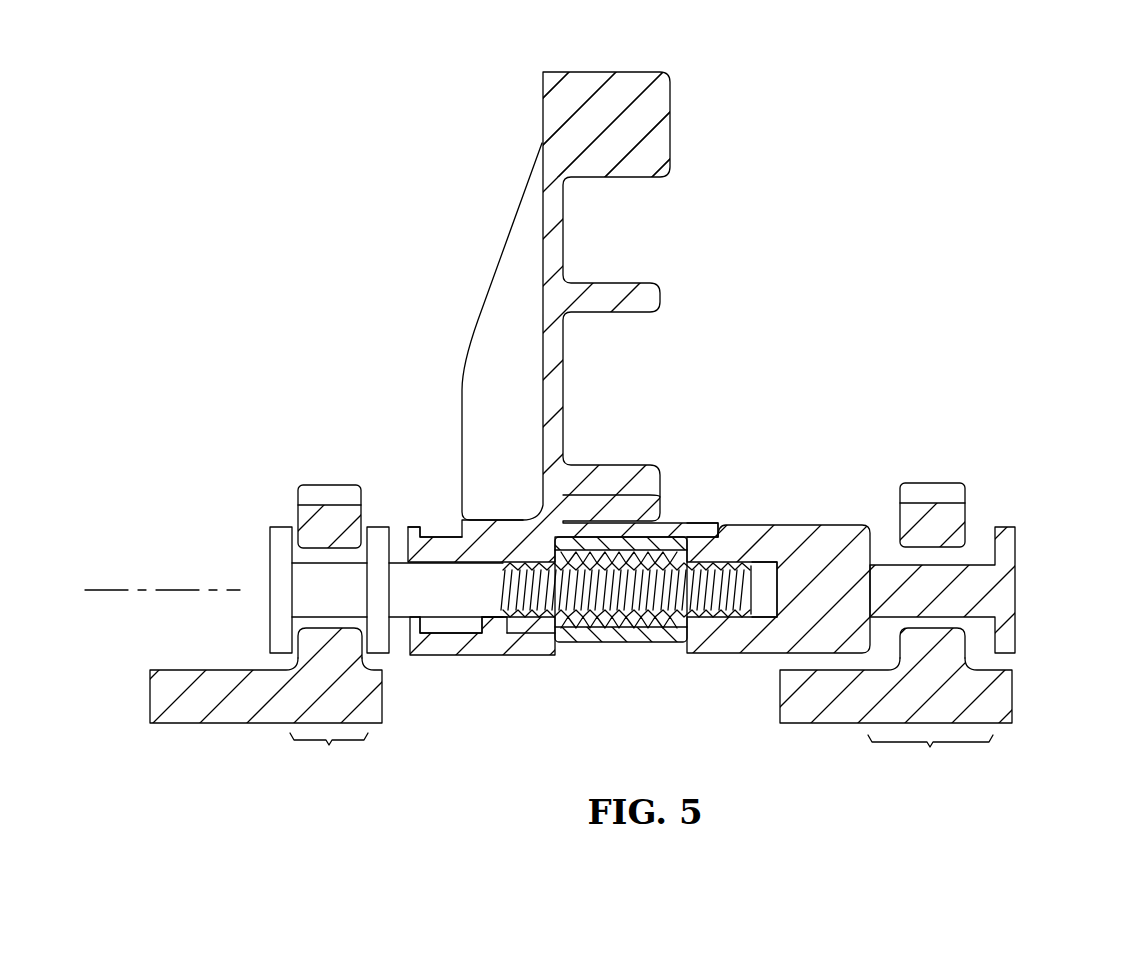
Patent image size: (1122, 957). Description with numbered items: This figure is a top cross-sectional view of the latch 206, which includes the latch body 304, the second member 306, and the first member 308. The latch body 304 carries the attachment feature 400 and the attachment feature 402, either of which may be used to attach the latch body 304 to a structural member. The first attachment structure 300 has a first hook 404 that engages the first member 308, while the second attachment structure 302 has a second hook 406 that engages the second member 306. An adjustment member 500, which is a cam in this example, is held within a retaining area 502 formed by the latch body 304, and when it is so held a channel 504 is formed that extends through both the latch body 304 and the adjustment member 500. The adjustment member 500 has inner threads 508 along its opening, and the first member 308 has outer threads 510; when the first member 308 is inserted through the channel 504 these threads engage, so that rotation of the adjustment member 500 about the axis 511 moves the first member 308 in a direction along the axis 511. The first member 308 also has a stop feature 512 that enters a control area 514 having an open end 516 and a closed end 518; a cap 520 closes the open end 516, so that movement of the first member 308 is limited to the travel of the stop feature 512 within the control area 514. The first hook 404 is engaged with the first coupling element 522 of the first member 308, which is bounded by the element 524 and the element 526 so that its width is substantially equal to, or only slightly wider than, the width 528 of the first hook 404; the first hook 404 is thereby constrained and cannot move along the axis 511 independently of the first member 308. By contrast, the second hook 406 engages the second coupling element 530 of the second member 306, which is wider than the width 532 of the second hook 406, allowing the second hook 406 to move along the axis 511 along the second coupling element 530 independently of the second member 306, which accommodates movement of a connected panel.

The latch 206 is at (772, 102).
The first attachment structure 300 is at (245, 724).
The second attachment structure 302 is at (860, 724).
The latch body 304 is at (506, 243).
The second member 306 is at (893, 575).
The first member 308 is at (307, 605).
The attachment feature 400 is at (646, 391).
The attachment feature 402 is at (598, 72).
The first hook 404 is at (298, 641).
The second hook 406 is at (966, 650).
The adjustment member 500 is at (588, 646).
The retaining area 502 is at (680, 668).
The channel 504 is at (762, 559).
The inner threads 508 is at (716, 550).
The outer threads 510 is at (622, 638).
The axis 511 is at (166, 583).
The stop feature 512 is at (458, 640).
The control area 514 is at (506, 647).
The open end 516 is at (398, 632).
The closed end 518 is at (545, 642).
The cap 520 is at (427, 525).
The first coupling element 522 is at (329, 756).
The element 524 is at (278, 557).
The element 526 is at (376, 535).
The width 528 is at (361, 443).
The second coupling element 530 is at (930, 757).
The width 532 is at (965, 447).